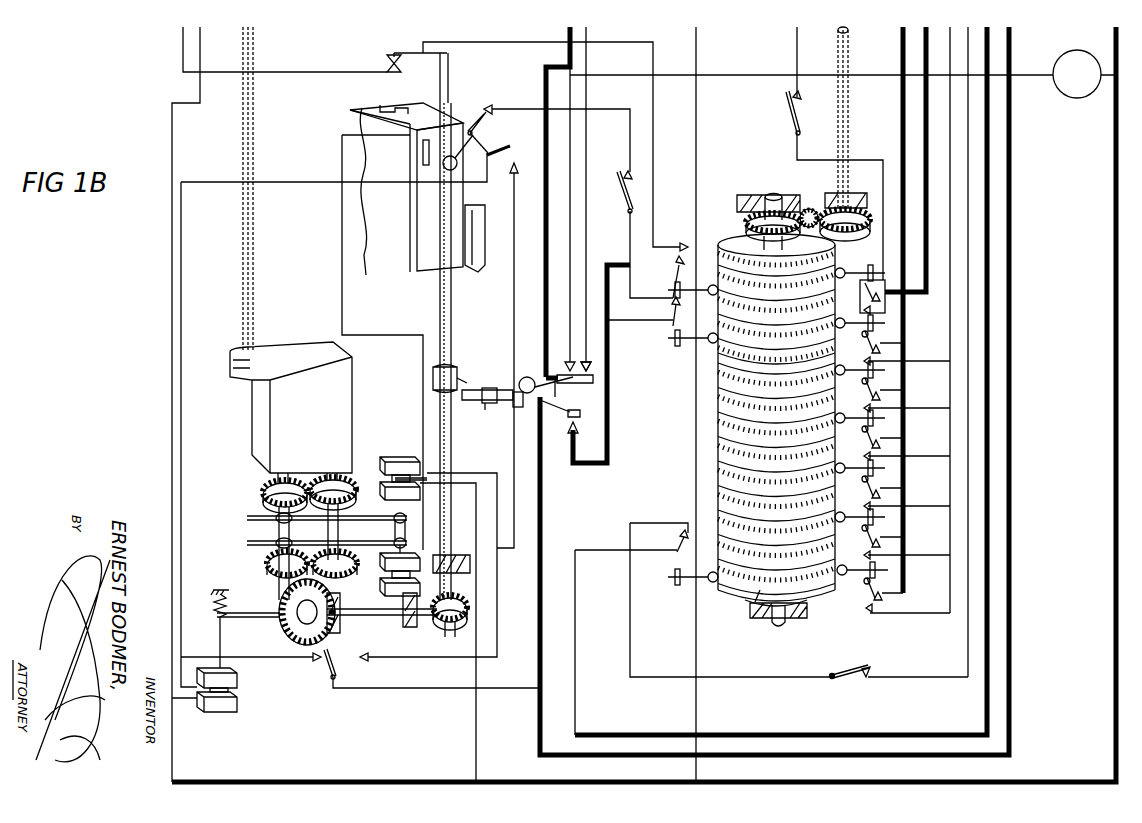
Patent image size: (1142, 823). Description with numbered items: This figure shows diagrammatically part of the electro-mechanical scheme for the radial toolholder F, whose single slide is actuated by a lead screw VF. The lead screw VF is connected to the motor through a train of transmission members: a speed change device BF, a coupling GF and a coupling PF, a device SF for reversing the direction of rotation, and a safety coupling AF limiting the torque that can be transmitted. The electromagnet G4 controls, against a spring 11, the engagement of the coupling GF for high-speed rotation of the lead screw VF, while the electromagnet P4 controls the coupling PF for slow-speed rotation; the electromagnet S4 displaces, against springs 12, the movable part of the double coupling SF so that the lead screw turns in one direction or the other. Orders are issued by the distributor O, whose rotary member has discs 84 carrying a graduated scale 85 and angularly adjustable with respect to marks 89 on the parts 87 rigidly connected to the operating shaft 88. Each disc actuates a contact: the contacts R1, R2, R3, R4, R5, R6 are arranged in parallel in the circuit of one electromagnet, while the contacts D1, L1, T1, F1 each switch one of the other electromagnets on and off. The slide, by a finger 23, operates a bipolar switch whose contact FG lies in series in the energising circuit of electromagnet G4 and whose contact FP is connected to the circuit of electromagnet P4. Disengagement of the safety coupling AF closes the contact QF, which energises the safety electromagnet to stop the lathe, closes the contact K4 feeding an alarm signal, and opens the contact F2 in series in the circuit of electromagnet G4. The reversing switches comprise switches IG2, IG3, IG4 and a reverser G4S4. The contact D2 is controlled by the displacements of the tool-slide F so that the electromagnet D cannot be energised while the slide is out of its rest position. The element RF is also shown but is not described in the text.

The contact D2 is at (390, 56).
The radial toolholder F is at (417, 189).
The finger 23 is at (440, 170).
The contact FG is at (482, 130).
The contact FP is at (510, 149).
The lead screw VF is at (452, 309).
The safety coupling AF is at (457, 380).
The contact K4 is at (570, 360).
The contact QF is at (590, 366).
The contact F2 is at (575, 424).
The switch IG3 is at (786, 120).
The switch IG4 is at (620, 200).
The contact D1 is at (672, 272).
The contact F1 is at (668, 326).
The contact L1 is at (672, 556).
The disc 84 is at (720, 410).
The graduated scale 85 is at (722, 460).
The distributor O is at (720, 357).
The part 87 is at (733, 600).
The operating shaft 88 is at (779, 612).
The mark 89 is at (763, 598).
The switch IG2 is at (840, 670).
The contact T1 is at (860, 295).
The contact R1 is at (862, 344).
The contact R2 is at (862, 392).
The contact R3 is at (864, 442).
The contact R4 is at (866, 491).
The contact R5 is at (867, 540).
The contact R6 is at (866, 592).
The relay RF is at (1077, 74).
The speed change device BF is at (291, 250).
The coupling GF is at (275, 510).
The coupling PF is at (275, 541).
The spring 11 is at (393, 528).
The electromagnet G4 is at (398, 457).
The electromagnet P4 is at (402, 552).
The spring 12 is at (219, 610).
The reversing device SF is at (280, 612).
The reverser G4S4 is at (322, 662).
The electromagnet S4 is at (232, 700).